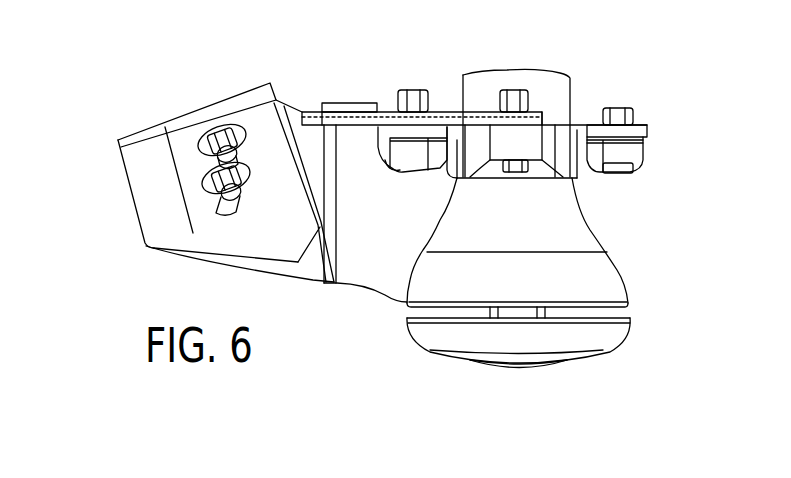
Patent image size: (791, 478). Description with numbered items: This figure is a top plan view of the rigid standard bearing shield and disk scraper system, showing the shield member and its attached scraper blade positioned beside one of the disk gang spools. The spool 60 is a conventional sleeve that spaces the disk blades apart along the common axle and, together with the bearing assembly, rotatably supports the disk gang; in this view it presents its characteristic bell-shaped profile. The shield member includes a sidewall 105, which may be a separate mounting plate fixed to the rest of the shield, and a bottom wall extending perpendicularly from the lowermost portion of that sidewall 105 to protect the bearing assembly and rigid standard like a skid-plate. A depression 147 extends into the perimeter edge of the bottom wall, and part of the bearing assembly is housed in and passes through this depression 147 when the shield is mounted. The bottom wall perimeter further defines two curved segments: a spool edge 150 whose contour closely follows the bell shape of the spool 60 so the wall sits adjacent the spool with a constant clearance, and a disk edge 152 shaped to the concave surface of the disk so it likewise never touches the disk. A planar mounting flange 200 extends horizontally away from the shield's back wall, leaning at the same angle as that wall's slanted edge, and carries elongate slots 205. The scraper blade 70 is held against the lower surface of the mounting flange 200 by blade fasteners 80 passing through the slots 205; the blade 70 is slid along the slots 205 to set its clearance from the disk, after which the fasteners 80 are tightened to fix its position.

The spool 60 is at (518, 218).
The scraper blade 70 is at (142, 133).
The blade fasteners 80 is at (233, 130).
The sidewall 105 is at (447, 113).
The depression 147 is at (387, 148).
The spool edge 150 is at (427, 250).
The disk edge 152 is at (377, 293).
The mounting flange 200 is at (226, 234).
The elongate slots 205 is at (202, 233).